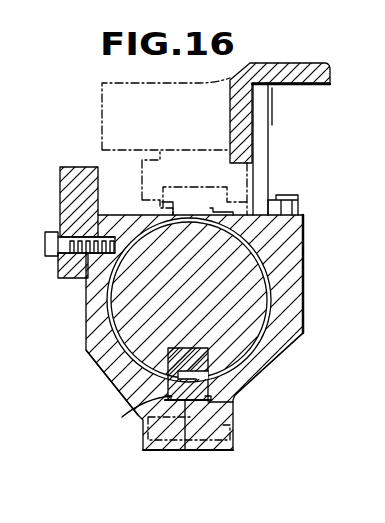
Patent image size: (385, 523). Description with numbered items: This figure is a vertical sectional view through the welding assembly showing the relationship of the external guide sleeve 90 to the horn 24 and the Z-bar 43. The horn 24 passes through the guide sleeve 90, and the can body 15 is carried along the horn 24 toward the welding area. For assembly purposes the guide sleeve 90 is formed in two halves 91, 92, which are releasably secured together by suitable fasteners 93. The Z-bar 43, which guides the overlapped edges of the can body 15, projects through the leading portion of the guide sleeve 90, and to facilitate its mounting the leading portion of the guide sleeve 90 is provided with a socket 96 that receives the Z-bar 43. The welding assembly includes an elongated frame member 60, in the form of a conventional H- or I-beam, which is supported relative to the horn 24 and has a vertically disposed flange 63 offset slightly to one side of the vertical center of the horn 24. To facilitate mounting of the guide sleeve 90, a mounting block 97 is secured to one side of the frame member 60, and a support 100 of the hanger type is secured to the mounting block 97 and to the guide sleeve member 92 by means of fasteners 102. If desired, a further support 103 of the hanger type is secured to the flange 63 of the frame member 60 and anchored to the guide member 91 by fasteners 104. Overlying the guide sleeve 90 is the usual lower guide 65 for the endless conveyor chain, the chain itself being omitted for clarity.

The can body 15 is at (121, 333).
The horn 24 is at (248, 288).
The Z-bar 43 is at (210, 391).
The frame member 60 is at (312, 66).
The flange 63 is at (256, 120).
The lower guide 65 is at (200, 172).
The guide sleeve 90 is at (303, 250).
The guide sleeve half 91 is at (292, 334).
The guide sleeve member 92 is at (90, 357).
The fasteners 93 is at (140, 435).
The socket 96 is at (125, 413).
The mounting block 97 is at (125, 130).
The support 100 is at (62, 172).
The fasteners 102 is at (47, 230).
The further support 103 is at (270, 165).
The fasteners 104 is at (285, 196).